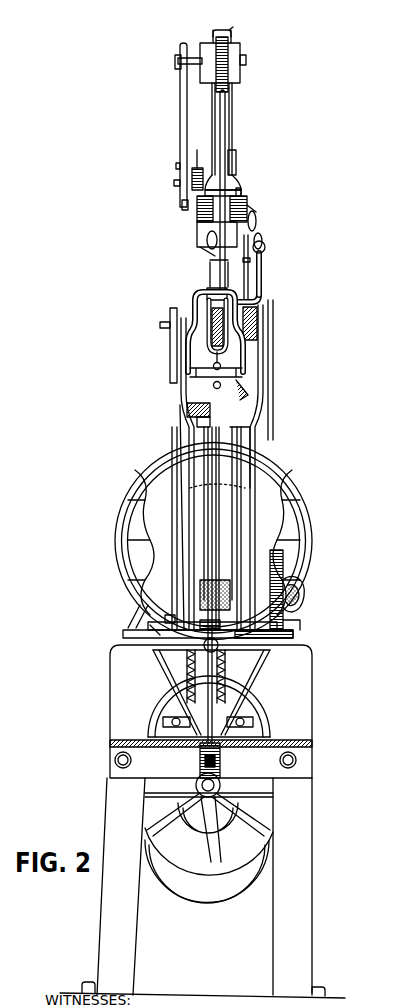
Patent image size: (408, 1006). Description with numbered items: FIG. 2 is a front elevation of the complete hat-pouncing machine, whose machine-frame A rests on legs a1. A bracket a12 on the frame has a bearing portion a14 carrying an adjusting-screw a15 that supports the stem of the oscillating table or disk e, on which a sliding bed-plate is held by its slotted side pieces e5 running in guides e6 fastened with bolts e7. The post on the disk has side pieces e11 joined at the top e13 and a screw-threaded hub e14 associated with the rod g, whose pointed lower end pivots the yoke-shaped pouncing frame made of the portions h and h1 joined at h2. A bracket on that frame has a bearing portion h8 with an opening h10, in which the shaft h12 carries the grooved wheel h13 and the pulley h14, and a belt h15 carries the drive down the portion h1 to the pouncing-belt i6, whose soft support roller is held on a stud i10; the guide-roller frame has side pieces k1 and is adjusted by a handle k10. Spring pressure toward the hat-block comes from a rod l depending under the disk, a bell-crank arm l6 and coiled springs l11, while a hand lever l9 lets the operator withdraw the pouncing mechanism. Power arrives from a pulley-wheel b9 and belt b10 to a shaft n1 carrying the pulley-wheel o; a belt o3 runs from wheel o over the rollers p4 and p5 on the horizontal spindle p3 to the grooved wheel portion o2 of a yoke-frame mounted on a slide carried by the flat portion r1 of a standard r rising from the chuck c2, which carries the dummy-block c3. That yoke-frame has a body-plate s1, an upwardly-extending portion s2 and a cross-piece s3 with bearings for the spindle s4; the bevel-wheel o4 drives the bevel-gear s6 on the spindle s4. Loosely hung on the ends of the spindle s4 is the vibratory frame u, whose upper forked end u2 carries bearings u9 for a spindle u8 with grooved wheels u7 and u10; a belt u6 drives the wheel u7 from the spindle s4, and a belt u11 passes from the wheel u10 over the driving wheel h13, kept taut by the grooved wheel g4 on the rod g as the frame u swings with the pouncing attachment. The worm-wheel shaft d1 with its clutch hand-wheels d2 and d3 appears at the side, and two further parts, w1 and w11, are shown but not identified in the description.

The oscillating or vibratory frame u is at (233, 112).
The upper forked end u2 is at (230, 32).
The belt u6 is at (180, 115).
The grooved wheel u7 is at (180, 50).
The spindle u8 is at (246, 60).
The bearings u9 is at (240, 46).
The grooved wheel u10 is at (226, 72).
The belt u11 is at (224, 100).
The body-plate s1 is at (176, 165).
The upwardly-extending portion s2 is at (182, 205).
The cross-piece s3 is at (240, 258).
The spindle or shaft s4 is at (174, 182).
The bevel-gear s6 is at (194, 166).
The rod g is at (218, 278).
The grooved wheel g4 is at (232, 160).
The plate w1 is at (238, 176).
The rods w11 is at (218, 262).
The pulley-wheel o is at (226, 878).
The grooved wheel portion o2 is at (200, 214).
The belt o3 is at (247, 212).
The bevel-wheel o4 is at (242, 204).
The horizontal spindle p3 is at (257, 215).
The roller or wheel p4 is at (256, 212).
The roller or wheel p5 is at (205, 232).
The arm or standard r is at (210, 268).
The flat portion r1 is at (200, 247).
The oscillating table or disk e is at (123, 634).
The longitudinal side pieces e5 is at (150, 624).
The guides e6 is at (150, 628).
The screws or bolts e7 is at (288, 625).
The side pieces e11 is at (197, 420).
The top connection e13 is at (247, 298).
The screw-threaded hub e14 is at (224, 290).
The hat-block chuck c2 is at (254, 308).
The dummy-block c3 is at (264, 362).
The frame portion h is at (213, 520).
The frame portion h1 is at (180, 436).
The connection h2 is at (188, 405).
The bearing portion h8 is at (205, 306).
The opening h10 is at (222, 352).
The shaft or spindle h12 is at (160, 326).
The grooved wheel h13 is at (228, 318).
The grooved pulley-wheel h14 is at (170, 318).
The belt h15 is at (181, 352).
The side pieces k1 is at (243, 372).
The handle k10 is at (250, 395).
The pouncing-belt i6 is at (228, 478).
The stud i10 is at (218, 603).
The pulley-wheel b9 is at (122, 505).
The belt b10 is at (140, 605).
The shaft d1 is at (300, 596).
The hand-wheel d2 is at (302, 584).
The hand-wheel d3 is at (285, 575).
The machine-frame A is at (224, 711).
The rod l is at (190, 690).
The bell-crank arm l6 is at (165, 716).
The upwardly-extending arm l9 is at (202, 752).
The coiled springs l11 is at (187, 683).
The legs a1 is at (103, 908).
The bracket a12 is at (300, 762).
The bearing portion a14 is at (222, 752).
The adjusting-screw a15 is at (220, 765).
The shaft n1 is at (190, 822).